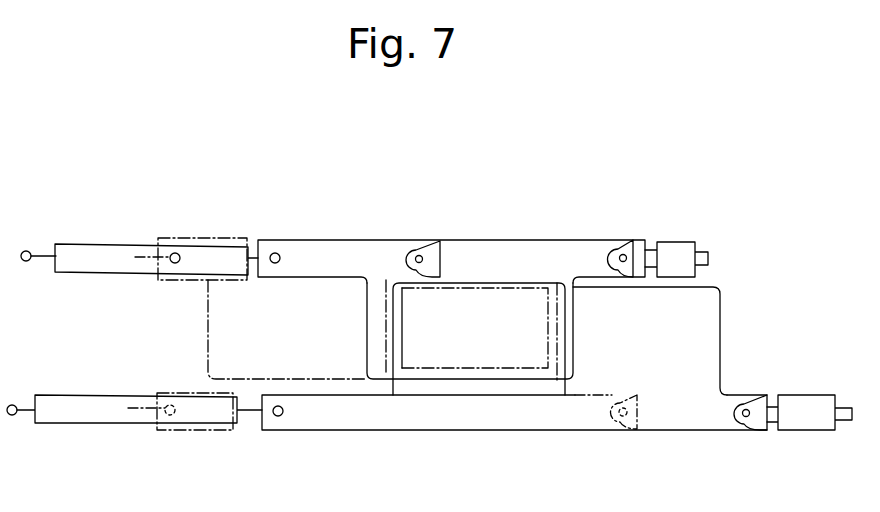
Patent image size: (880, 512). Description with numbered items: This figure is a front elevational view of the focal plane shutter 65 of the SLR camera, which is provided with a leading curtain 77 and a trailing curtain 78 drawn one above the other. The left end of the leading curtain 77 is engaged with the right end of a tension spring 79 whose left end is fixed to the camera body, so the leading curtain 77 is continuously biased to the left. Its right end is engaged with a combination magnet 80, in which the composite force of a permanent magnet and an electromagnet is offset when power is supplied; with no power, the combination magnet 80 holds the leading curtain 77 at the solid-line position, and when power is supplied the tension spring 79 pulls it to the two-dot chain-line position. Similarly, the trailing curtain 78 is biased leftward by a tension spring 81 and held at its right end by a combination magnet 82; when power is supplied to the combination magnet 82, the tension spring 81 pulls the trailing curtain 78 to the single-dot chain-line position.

The focal plane shutter 65 is at (727, 181).
The leading curtain 77 is at (495, 255).
The trailing curtain 78 is at (670, 418).
The tension spring 79 is at (118, 250).
The combination magnet 80 is at (682, 245).
The tension spring 81 is at (117, 418).
The combination magnet 82 is at (807, 422).